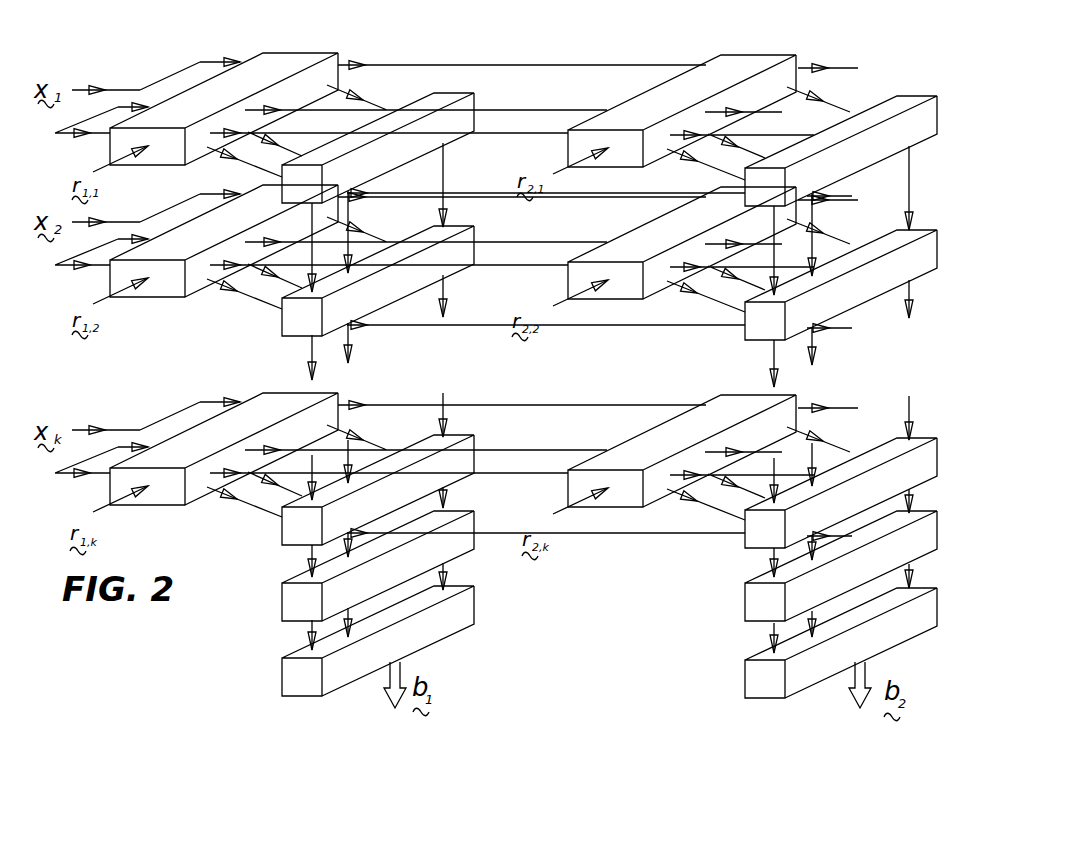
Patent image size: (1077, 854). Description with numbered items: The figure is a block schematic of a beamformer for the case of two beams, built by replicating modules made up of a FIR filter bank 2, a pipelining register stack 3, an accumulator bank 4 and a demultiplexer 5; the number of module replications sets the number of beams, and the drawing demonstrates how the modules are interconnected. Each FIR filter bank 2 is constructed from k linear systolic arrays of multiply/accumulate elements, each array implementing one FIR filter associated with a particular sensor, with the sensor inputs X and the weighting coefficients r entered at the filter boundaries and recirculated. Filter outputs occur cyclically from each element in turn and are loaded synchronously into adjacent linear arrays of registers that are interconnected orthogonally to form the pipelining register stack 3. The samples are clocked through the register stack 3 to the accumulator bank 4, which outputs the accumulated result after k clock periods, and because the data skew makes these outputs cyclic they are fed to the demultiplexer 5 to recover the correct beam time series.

The FIR filter bank 2 is at (603, 460).
The pipelining register stack 3 is at (937, 435).
The accumulator bank 4 is at (609, 566).
The demultiplexer 5 is at (609, 642).